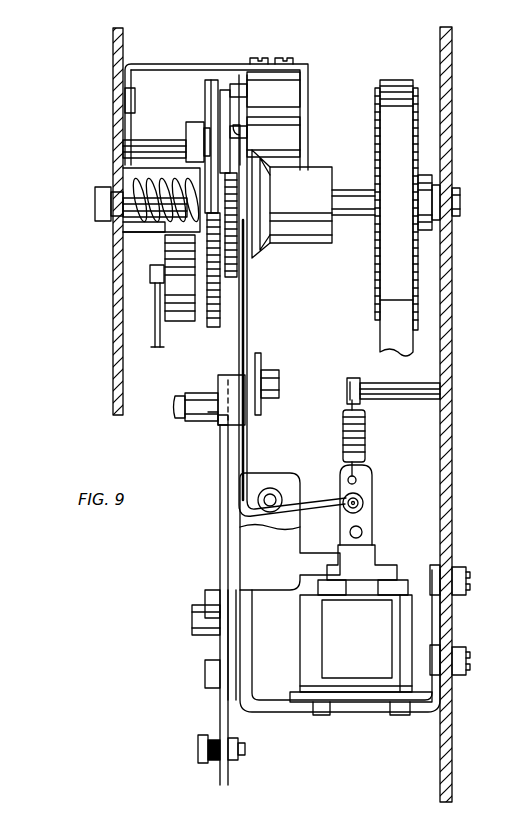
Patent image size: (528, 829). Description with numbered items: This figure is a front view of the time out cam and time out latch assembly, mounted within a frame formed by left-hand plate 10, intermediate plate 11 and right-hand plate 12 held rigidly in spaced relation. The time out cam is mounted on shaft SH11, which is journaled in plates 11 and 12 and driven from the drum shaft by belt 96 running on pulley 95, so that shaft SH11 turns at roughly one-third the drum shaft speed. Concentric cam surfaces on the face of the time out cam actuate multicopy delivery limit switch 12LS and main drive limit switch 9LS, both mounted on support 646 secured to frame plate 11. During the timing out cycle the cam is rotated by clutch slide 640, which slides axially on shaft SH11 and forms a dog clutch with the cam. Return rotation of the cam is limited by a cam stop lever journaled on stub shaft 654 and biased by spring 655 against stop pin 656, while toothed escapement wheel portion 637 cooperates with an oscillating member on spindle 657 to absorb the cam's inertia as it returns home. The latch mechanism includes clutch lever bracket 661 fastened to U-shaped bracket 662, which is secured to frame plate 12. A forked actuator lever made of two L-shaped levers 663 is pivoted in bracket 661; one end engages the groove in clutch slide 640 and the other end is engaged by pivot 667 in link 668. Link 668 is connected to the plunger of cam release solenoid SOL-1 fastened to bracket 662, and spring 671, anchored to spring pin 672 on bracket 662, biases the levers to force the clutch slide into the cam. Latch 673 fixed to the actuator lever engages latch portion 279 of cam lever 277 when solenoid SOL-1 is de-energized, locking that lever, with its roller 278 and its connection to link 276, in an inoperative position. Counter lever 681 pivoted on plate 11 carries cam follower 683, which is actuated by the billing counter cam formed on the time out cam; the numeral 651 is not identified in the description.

The left-hand plate 10 is at (133, 50).
The intermediate plate 11 is at (113, 352).
The right-hand plate 12 is at (452, 733).
The support 646 is at (179, 64).
The spindle 657 is at (148, 140).
The main drive limit switch 9LS is at (300, 89).
The multicopy delivery limit switch 12LS is at (300, 146).
The pulley 95 is at (375, 111).
The belt 96 is at (380, 339).
The shaft SH11 is at (460, 201).
The coil spring 651 is at (126, 168).
The stub shaft 654 is at (110, 204).
The stop pin 656 is at (124, 228).
The spring 655 is at (160, 278).
The toothed escapement wheel portion 637 is at (212, 269).
The clutch slide 640 is at (318, 232).
The L-shaped levers 663 is at (248, 299).
The counter lever 681 is at (155, 325).
The cam follower 683 is at (175, 337).
The latch 673 is at (218, 376).
The roller 278 is at (215, 394).
The latch portion 279 is at (220, 415).
The spring pin 672 is at (435, 390).
The spring 671 is at (365, 436).
The pivot 667 is at (363, 506).
The link 668 is at (365, 520).
The cam lever 277 is at (220, 534).
The clutch lever bracket 661 is at (245, 545).
The cam release solenoid SOL-1 is at (403, 636).
The link 276 is at (205, 735).
The U-shaped bracket 662 is at (270, 719).